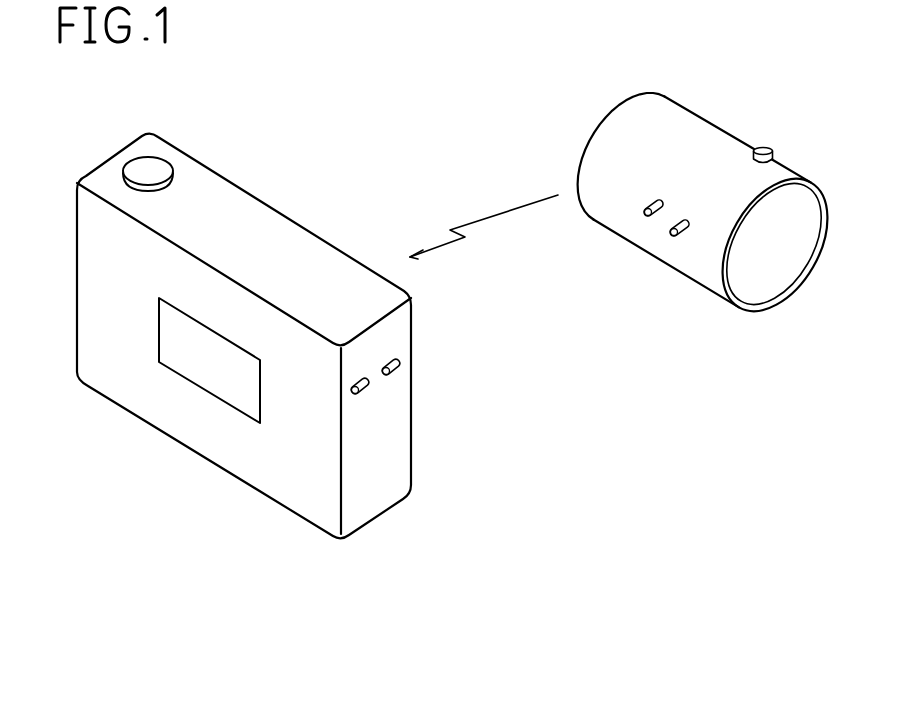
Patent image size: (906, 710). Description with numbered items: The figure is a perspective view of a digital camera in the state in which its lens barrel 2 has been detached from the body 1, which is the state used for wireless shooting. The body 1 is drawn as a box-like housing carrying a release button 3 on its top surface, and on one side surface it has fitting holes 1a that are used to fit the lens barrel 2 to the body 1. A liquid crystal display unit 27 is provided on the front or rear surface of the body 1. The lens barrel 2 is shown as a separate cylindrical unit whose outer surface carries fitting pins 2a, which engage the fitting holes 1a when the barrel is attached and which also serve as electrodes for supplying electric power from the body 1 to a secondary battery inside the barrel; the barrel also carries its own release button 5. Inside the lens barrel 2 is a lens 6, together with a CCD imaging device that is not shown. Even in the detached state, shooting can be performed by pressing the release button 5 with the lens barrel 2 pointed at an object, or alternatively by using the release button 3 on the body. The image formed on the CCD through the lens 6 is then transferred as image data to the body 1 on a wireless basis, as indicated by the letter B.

The body 1 is at (270, 248).
The fitting holes 1a is at (358, 391).
The lens barrel 2 is at (627, 152).
The fitting pins 2a is at (645, 215).
The release button 3 is at (157, 170).
The release button 5 is at (766, 147).
The lens 6 is at (778, 260).
The liquid crystal display unit 27 is at (215, 400).
The wireless transfer B is at (487, 218).